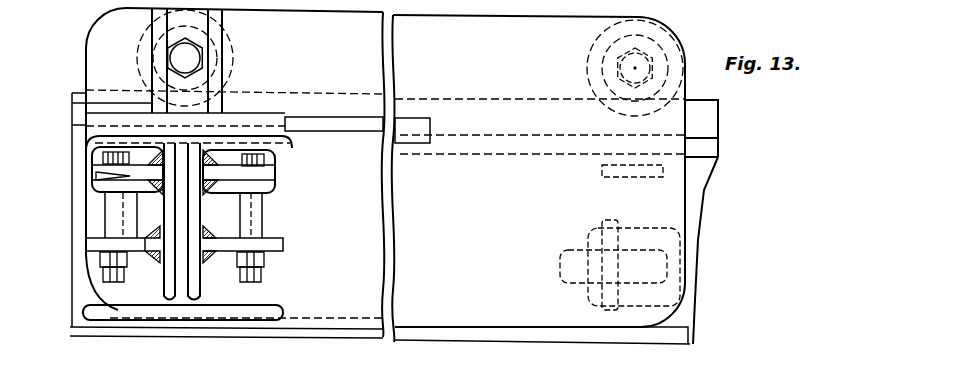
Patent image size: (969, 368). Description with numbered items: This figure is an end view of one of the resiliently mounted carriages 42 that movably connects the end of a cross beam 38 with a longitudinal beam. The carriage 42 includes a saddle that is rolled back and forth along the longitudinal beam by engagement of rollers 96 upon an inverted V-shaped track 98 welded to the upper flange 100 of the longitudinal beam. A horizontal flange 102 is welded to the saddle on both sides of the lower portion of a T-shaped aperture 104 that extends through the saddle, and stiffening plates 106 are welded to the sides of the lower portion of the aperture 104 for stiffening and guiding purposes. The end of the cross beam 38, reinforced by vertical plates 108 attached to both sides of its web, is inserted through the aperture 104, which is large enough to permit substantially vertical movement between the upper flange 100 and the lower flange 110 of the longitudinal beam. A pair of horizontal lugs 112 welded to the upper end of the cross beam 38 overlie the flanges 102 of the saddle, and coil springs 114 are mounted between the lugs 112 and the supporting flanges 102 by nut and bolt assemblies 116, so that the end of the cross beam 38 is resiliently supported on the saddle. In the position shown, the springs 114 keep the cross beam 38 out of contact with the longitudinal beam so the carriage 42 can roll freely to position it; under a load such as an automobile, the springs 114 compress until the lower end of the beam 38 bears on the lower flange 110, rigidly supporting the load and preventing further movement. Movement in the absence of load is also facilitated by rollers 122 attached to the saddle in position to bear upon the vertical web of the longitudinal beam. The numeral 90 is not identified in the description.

The cross beam 38 is at (694, 179).
The resiliently mounted carriage 42 is at (496, 16).
The pivot bracket 90 is at (150, 27).
The roller 96 is at (657, 33).
The inverted V-shaped track 98 is at (705, 121).
The upper flange 100 is at (708, 152).
The horizontal flange 102 is at (283, 245).
The T-shaped aperture 104 is at (274, 169).
The stiffening plate 106 is at (218, 285).
The vertical plate 108 is at (170, 270).
The lower flange 110 is at (673, 337).
The horizontal lug 112 is at (92, 176).
The coil spring 114 is at (258, 207).
The nut and bolt assembly 116 is at (263, 270).
The roller 122 is at (647, 272).